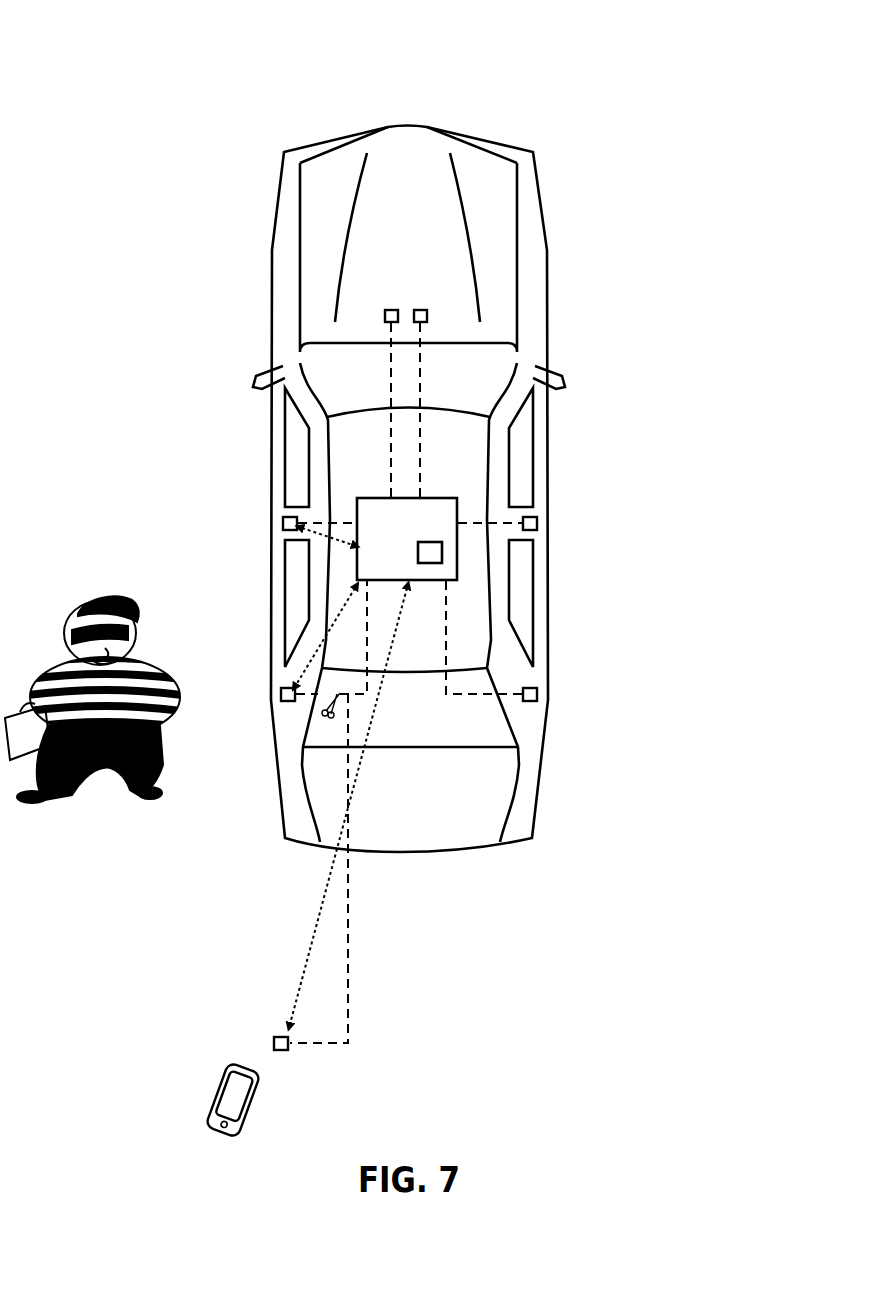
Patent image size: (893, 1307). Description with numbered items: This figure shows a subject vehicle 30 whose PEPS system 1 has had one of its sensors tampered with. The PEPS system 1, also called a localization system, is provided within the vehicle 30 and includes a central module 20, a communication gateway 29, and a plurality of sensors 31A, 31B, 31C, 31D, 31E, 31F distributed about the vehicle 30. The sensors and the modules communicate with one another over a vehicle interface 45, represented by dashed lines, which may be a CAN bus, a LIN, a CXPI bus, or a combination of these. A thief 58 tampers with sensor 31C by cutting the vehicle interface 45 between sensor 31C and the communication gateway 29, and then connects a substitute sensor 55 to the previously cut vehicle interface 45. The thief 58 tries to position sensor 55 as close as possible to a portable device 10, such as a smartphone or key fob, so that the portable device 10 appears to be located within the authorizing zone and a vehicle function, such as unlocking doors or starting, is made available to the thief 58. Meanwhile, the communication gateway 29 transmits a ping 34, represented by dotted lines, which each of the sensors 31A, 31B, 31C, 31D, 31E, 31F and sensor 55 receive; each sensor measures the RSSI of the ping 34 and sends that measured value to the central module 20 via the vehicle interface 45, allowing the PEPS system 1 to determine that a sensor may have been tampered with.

The PEPS system 1 is at (120, 60).
The portable device 10 is at (212, 1100).
The central module 20 is at (367, 497).
The communication gateway 29 is at (432, 541).
The vehicle 30 is at (431, 126).
The sensor 31A is at (391, 309).
The sensor 31B is at (283, 523).
The sensor 31C is at (281, 694).
The sensor 31D is at (420, 309).
The sensor 31E is at (537, 523).
The sensor 31F is at (537, 694).
The ping 34 is at (328, 878).
The vehicle interface 45 is at (349, 911).
The sensor 55 is at (273, 1043).
The thief 58 is at (104, 598).